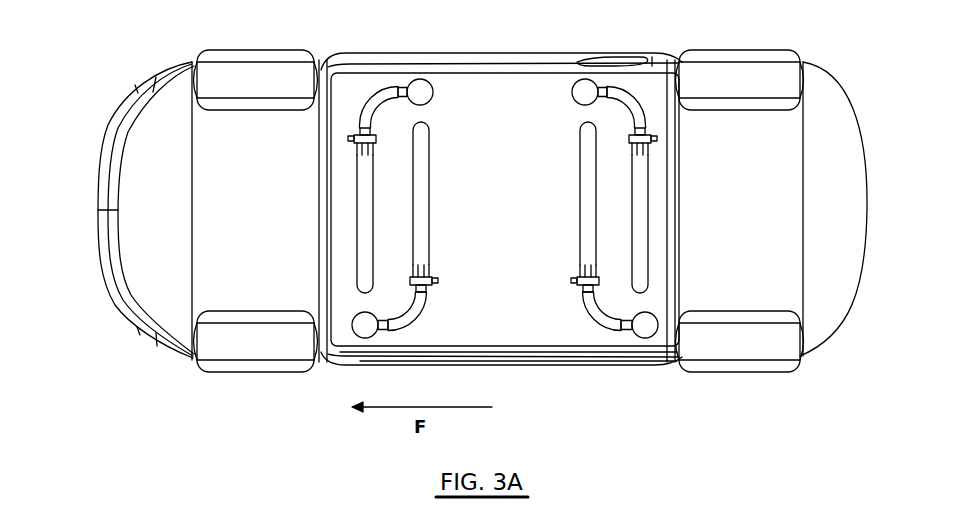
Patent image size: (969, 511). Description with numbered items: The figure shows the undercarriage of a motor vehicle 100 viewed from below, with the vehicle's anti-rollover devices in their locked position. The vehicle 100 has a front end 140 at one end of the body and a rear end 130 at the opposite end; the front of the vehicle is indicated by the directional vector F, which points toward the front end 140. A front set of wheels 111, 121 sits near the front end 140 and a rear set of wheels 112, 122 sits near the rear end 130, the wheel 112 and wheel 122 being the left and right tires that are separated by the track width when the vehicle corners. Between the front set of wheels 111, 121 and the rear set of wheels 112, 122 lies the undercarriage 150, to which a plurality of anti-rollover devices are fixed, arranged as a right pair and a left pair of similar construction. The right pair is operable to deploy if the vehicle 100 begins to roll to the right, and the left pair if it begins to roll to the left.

The vehicle 100 is at (497, 209).
The front wheel 111 is at (220, 347).
The rear wheel 112 is at (765, 347).
The front wheel 121 is at (218, 80).
The rear wheel 122 is at (772, 77).
The rear end 130 is at (853, 215).
The front end 140 is at (100, 192).
The undercarriage 150 is at (505, 209).